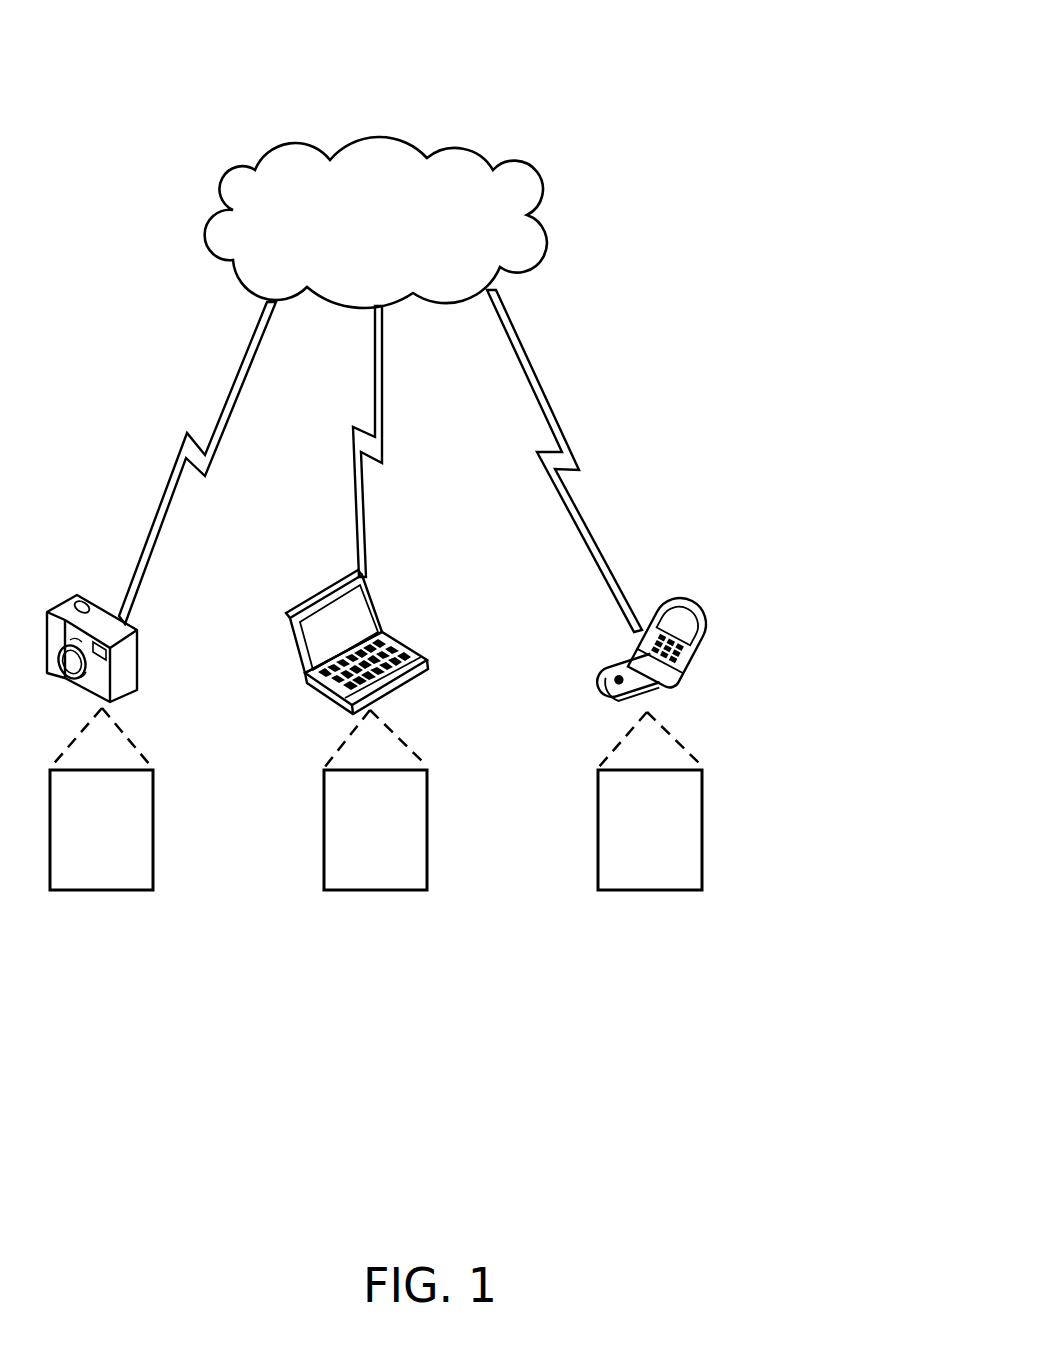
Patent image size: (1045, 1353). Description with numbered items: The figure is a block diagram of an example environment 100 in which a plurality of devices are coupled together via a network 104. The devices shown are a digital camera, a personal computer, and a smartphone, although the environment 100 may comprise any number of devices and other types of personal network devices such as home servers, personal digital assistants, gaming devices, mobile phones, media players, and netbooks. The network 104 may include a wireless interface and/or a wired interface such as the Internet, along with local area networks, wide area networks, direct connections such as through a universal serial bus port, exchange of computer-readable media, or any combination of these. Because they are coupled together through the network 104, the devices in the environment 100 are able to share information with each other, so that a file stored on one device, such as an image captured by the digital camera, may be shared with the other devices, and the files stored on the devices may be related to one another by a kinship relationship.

The environment 100 is at (663, 69).
The network 104 is at (392, 235).